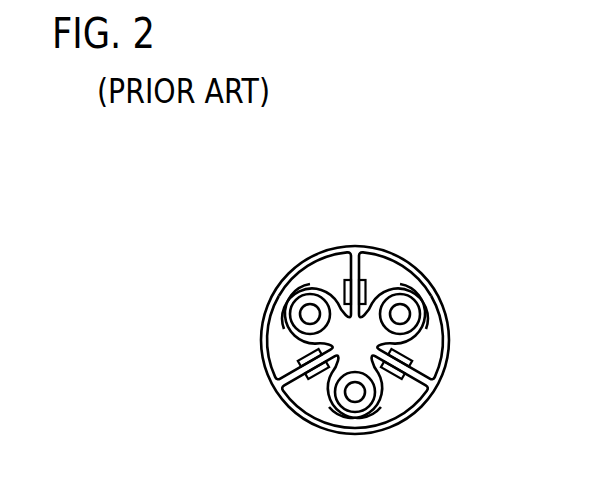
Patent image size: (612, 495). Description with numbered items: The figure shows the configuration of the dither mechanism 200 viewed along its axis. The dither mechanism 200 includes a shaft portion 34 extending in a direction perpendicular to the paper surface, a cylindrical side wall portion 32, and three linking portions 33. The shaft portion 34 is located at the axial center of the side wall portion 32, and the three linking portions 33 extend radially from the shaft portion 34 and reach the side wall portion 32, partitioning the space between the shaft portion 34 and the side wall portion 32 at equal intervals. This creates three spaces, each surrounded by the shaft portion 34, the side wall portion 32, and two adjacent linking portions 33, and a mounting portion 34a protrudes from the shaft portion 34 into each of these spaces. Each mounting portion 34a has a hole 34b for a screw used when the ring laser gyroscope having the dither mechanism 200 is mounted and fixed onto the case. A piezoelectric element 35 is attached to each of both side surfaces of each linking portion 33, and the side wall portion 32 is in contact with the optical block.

The dither mechanism 200 is at (191, 226).
The side wall portion 32 is at (265, 312).
The linking portion 33 is at (302, 380).
The shaft portion 34 is at (355, 330).
The mounting portion 34a is at (407, 288).
The hole 34b is at (405, 313).
The piezoelectric element 35 is at (412, 355).